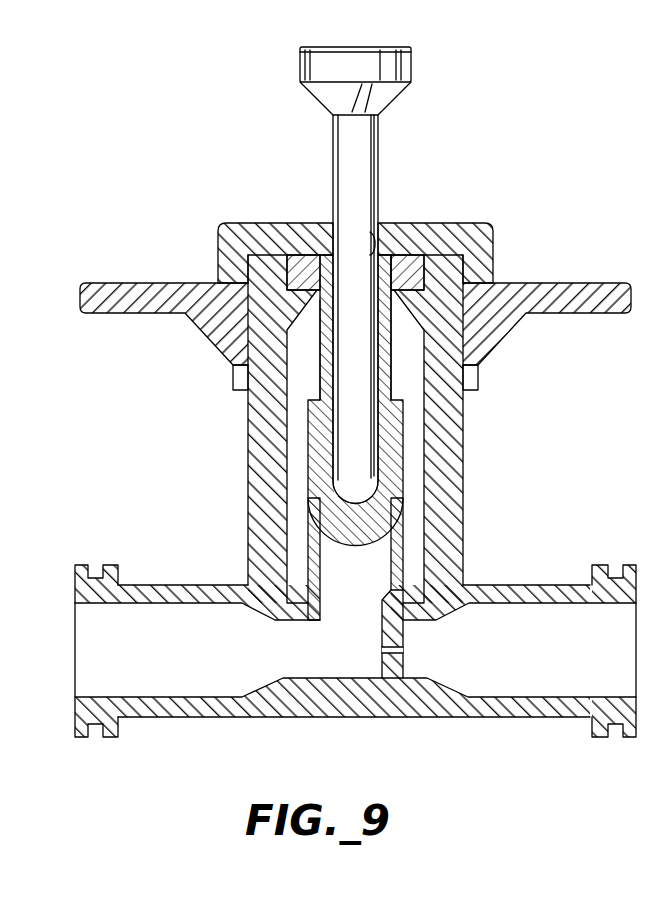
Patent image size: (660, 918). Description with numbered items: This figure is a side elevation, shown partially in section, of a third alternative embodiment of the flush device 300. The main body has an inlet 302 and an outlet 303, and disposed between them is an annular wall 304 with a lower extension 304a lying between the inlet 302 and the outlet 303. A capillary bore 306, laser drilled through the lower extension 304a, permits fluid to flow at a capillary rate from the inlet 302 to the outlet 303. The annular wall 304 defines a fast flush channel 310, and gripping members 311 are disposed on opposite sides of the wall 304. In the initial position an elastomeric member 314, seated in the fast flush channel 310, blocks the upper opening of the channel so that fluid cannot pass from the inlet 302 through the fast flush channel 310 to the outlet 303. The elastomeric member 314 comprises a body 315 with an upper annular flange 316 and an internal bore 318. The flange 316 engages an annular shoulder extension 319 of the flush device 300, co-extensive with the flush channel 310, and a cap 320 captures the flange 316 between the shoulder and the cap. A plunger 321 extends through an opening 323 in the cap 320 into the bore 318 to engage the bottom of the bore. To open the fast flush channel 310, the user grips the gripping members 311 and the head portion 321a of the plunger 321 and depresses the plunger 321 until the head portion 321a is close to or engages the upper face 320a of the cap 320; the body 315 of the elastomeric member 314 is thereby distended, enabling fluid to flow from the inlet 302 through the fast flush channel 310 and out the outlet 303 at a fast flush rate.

The flush device 300 is at (508, 250).
The inlet 302 is at (582, 682).
The outlet 303 is at (233, 682).
The annular wall 304 is at (402, 490).
The lower extension 304a is at (402, 627).
The capillary bore 306 is at (387, 658).
The fast flush channel 310 is at (378, 556).
The gripping members 311 is at (142, 283).
The elastomeric member 314 is at (400, 340).
The body 315 is at (392, 373).
The upper annular flange 316 is at (258, 262).
The internal bore 318 is at (333, 383).
The annular shoulder extension 319 is at (430, 320).
The cap 320 is at (275, 232).
The upper face 320a is at (483, 235).
The plunger 321 is at (345, 183).
The head portion 321a is at (405, 68).
The opening 323 is at (370, 248).